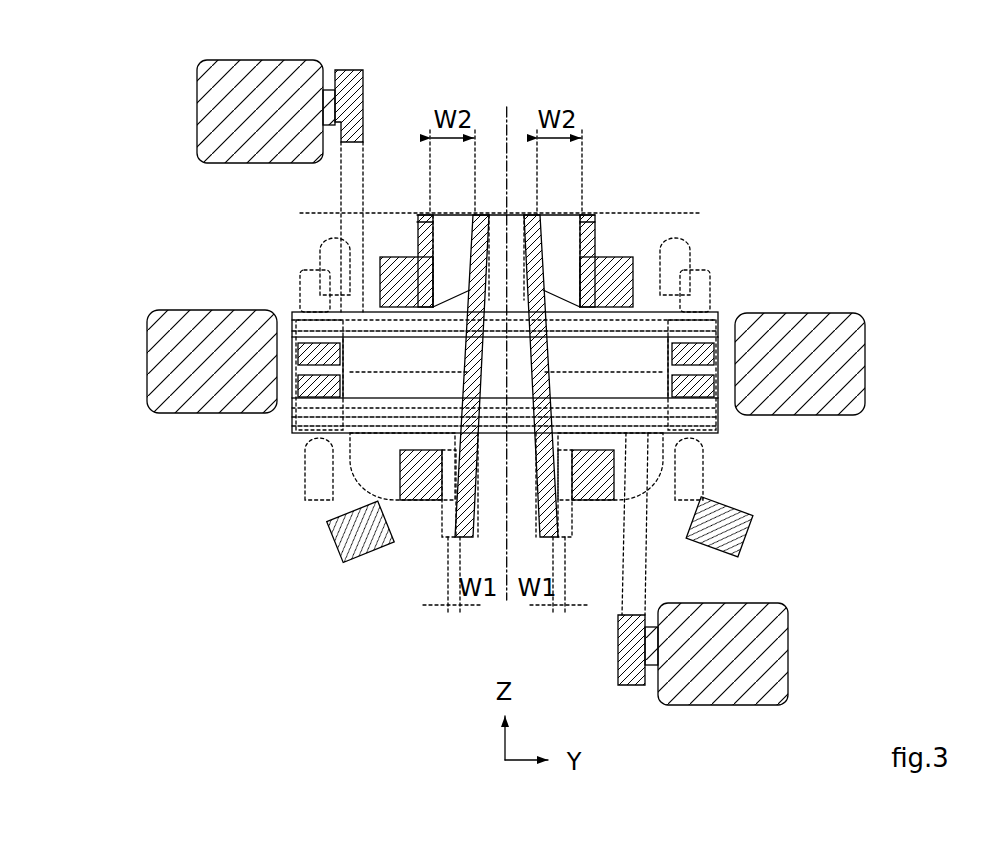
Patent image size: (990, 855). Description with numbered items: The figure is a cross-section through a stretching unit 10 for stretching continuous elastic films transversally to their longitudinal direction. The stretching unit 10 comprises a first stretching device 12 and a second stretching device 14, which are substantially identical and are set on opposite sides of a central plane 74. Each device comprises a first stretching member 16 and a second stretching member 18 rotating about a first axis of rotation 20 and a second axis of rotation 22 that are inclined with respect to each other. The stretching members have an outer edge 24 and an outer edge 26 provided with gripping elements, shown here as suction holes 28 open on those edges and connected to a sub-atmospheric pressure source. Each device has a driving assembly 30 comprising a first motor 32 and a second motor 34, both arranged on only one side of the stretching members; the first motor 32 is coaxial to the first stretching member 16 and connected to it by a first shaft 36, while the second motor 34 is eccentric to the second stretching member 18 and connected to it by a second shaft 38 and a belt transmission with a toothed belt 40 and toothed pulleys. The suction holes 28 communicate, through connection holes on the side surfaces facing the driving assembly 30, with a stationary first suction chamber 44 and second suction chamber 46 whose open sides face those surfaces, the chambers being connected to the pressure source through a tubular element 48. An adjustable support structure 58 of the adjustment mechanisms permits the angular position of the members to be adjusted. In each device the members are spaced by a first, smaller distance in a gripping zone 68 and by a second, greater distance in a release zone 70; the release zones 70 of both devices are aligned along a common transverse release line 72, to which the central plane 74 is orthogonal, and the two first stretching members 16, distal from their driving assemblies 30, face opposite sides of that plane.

The stretching unit 10 is at (810, 105).
The first stretching device 12 is at (825, 220).
The second stretching device 14 is at (185, 207).
The first stretching member 16 is at (520, 205).
The second stretching member 18 is at (418, 197).
The first axis of rotation 20 is at (505, 372).
The second axis of rotation 22 is at (425, 372).
The outer edge of first stretching member 24 is at (524, 232).
The outer edge of second stretching member 26 is at (420, 218).
The suction holes 28 is at (437, 527).
The driving assembly 30 is at (150, 487).
The first motor 32 is at (168, 380).
The second motor 34 is at (208, 95).
The first shaft 36 is at (318, 440).
The second shaft 38 is at (360, 285).
The toothed belt 40 is at (352, 200).
The first suction chamber 44 is at (522, 447).
The second suction chamber 46 is at (400, 237).
The tubular element 48 is at (328, 286).
The adjustable support structure 58 is at (308, 417).
The gripping zone 68 is at (448, 555).
The release zone 70 is at (450, 213).
The common transverse release line 72 is at (693, 213).
The central plane 74 is at (507, 107).